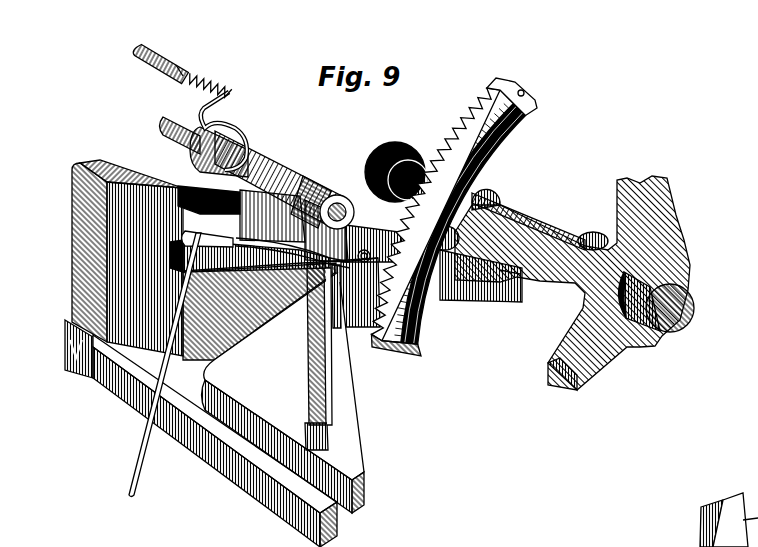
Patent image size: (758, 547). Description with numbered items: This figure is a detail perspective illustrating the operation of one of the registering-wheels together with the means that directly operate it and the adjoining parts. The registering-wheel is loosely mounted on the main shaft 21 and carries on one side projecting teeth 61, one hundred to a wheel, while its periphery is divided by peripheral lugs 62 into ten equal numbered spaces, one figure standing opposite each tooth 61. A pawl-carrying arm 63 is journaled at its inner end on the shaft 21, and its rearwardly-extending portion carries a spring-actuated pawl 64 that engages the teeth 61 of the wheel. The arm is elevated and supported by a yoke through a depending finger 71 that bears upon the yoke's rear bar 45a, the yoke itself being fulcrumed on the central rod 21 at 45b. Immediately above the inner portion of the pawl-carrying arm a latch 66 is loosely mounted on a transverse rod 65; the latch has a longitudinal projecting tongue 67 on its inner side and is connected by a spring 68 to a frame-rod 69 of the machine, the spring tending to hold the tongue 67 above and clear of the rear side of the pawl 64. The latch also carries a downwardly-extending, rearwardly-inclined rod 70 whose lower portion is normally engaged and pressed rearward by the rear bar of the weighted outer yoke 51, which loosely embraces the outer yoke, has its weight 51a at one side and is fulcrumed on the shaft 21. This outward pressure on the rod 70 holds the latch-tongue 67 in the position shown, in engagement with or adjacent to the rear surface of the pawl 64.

The main shaft 21 is at (688, 304).
The rear bar of yoke 45a is at (343, 463).
The yoke fulcrum 45b is at (340, 322).
The weighted yoke 51 is at (232, 480).
The weight 51a is at (82, 244).
The projecting teeth 61 is at (458, 120).
The peripheral lugs 62 is at (527, 107).
The pawl-carrying arms 63 is at (300, 264).
The spring-actuated pawl 64 is at (368, 168).
The transverse rod 65 is at (165, 130).
The latch 66 is at (272, 160).
The latch-tongue 67 is at (357, 190).
The spring 68 is at (222, 88).
The frame-rod 69 is at (168, 55).
The latch rod 70 is at (145, 434).
The finger 71 is at (326, 386).